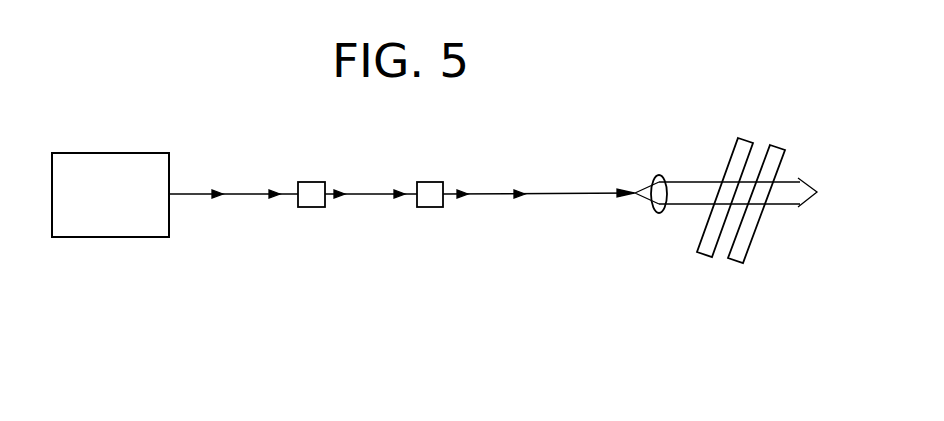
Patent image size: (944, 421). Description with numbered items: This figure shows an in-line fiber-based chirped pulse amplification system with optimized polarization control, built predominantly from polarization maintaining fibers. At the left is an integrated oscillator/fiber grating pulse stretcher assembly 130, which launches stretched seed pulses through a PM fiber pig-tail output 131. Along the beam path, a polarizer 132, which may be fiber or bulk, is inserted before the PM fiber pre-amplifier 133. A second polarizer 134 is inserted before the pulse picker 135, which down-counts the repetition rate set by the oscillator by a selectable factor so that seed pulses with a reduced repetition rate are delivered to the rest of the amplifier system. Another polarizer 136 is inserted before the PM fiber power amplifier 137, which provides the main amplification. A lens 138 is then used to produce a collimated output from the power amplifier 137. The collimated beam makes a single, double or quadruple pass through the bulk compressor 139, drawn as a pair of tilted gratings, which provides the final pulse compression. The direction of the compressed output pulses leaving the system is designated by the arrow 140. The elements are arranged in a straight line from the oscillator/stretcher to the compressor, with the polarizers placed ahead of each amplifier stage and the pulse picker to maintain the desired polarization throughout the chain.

The integrated oscillator/fiber grating pulse stretcher assembly 130 is at (86, 153).
The PM fiber pig-tail output 131 is at (197, 197).
The polarizer 132 is at (252, 192).
The PM fiber pre-amplifier 133 is at (308, 197).
The second polarizer 134 is at (373, 192).
The pulse picker 135 is at (430, 197).
The polarizer 136 is at (490, 192).
The PM fiber power amplifier 137 is at (570, 196).
The lens 138 is at (657, 175).
The bulk compressor 139 is at (702, 257).
The arrow 140 is at (816, 255).